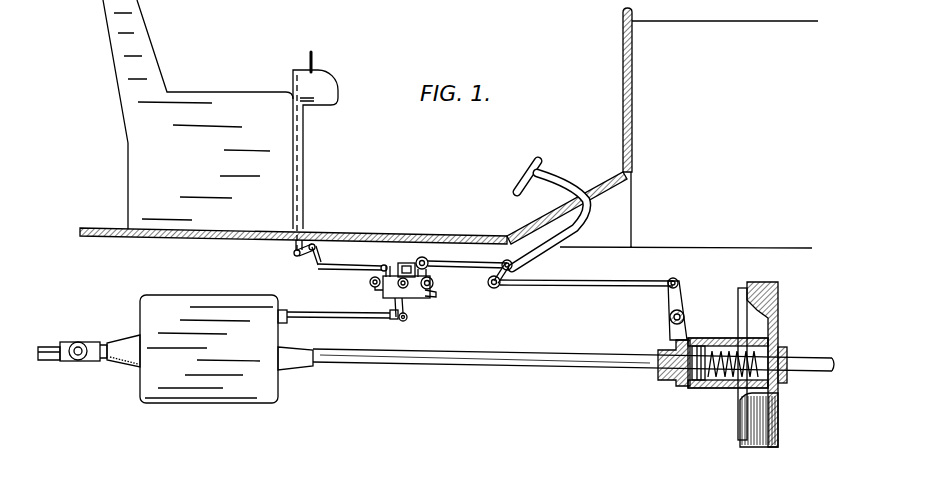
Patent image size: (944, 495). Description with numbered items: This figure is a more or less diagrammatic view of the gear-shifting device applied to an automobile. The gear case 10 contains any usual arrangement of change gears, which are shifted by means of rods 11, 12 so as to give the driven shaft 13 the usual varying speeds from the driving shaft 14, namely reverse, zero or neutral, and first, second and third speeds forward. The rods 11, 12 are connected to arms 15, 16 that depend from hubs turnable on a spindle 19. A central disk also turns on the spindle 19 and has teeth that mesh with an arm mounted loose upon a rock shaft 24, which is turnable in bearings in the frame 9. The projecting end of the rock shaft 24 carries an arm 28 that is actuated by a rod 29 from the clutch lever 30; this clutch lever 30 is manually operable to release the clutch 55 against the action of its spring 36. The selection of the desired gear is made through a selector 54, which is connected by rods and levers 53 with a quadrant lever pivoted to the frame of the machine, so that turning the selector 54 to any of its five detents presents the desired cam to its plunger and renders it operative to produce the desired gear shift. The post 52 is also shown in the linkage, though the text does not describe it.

The frame 9 is at (390, 291).
The gear case 10 is at (207, 293).
The rod 11 is at (394, 313).
The rod 12 is at (340, 316).
The driven shaft 13 is at (102, 342).
The driving shaft 14 is at (511, 365).
The arm 15 is at (402, 321).
The arm 16 is at (404, 305).
The spindle 19 is at (404, 266).
The rock shaft 24 is at (432, 287).
The arm 28 is at (428, 270).
The rod 29 is at (470, 261).
The clutch lever 30 is at (583, 223).
The spring 36 is at (722, 386).
The post 52 is at (388, 262).
The rods and levers 53 is at (332, 262).
The selector 54 is at (315, 72).
The clutch 55 is at (739, 312).